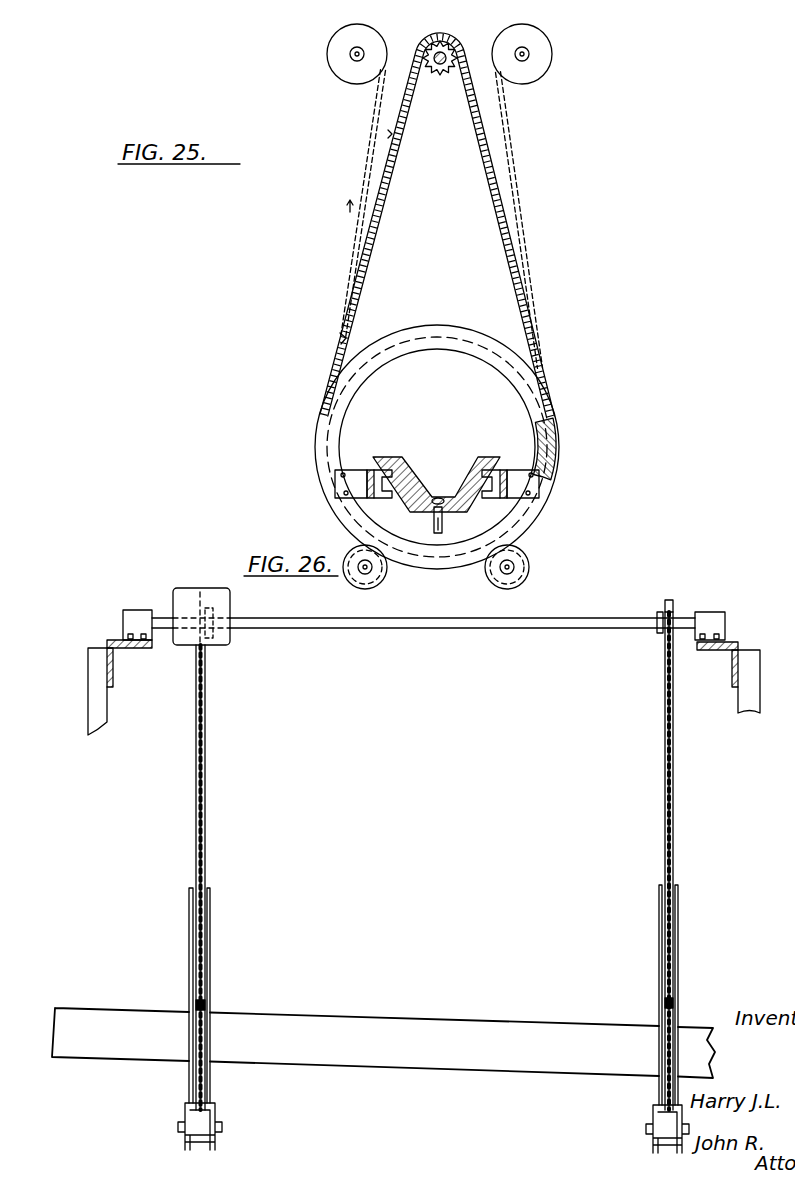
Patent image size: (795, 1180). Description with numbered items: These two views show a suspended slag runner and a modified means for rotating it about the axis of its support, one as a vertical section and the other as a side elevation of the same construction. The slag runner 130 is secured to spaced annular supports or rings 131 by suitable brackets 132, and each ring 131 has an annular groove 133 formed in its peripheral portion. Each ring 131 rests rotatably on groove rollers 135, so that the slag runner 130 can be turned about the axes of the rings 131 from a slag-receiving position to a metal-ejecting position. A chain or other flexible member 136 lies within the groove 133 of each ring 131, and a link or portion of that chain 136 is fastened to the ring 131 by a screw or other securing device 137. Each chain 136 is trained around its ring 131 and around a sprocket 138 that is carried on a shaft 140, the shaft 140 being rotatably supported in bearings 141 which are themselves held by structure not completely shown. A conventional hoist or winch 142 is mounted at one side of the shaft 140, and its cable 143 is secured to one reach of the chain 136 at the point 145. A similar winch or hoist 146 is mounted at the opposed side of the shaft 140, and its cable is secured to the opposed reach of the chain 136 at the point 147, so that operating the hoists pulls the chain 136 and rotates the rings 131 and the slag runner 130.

In FIG. 25, the slag runner 130 is at (406, 478).
In FIG. 26, the slag runner 130 is at (310, 1013).
In FIG. 25, the annular support ring 131 is at (492, 330).
In FIG. 26, the annular support ring 131 is at (211, 920).
In FIG. 25, the bracket 132 is at (345, 482).
In FIG. 25, the annular groove 133 is at (558, 471).
In FIG. 25, the groove roller 135 is at (527, 562).
In FIG. 26, the groove roller 135 is at (216, 1113).
In FIG. 25, the chain 136 is at (500, 206).
In FIG. 26, the chain 136 is at (205, 745).
In FIG. 25, the screw securing device 137 is at (556, 446).
In FIG. 26, the screw securing device 137 is at (206, 1006).
In FIG. 25, the sprocket 138 is at (446, 76).
In FIG. 26, the sprocket 138 is at (216, 604).
In FIG. 25, the shaft 140 is at (436, 53).
In FIG. 26, the bearing 141 is at (135, 596).
In FIG. 25, the hoist 142 is at (350, 70).
In FIG. 26, the hoist 142 is at (187, 588).
In FIG. 25, the cable 143 is at (370, 126).
In FIG. 25, the cable attachment 145 is at (388, 134).
In FIG. 25, the winch 146 is at (540, 62).
In FIG. 25, the cable attachment 147 is at (485, 128).